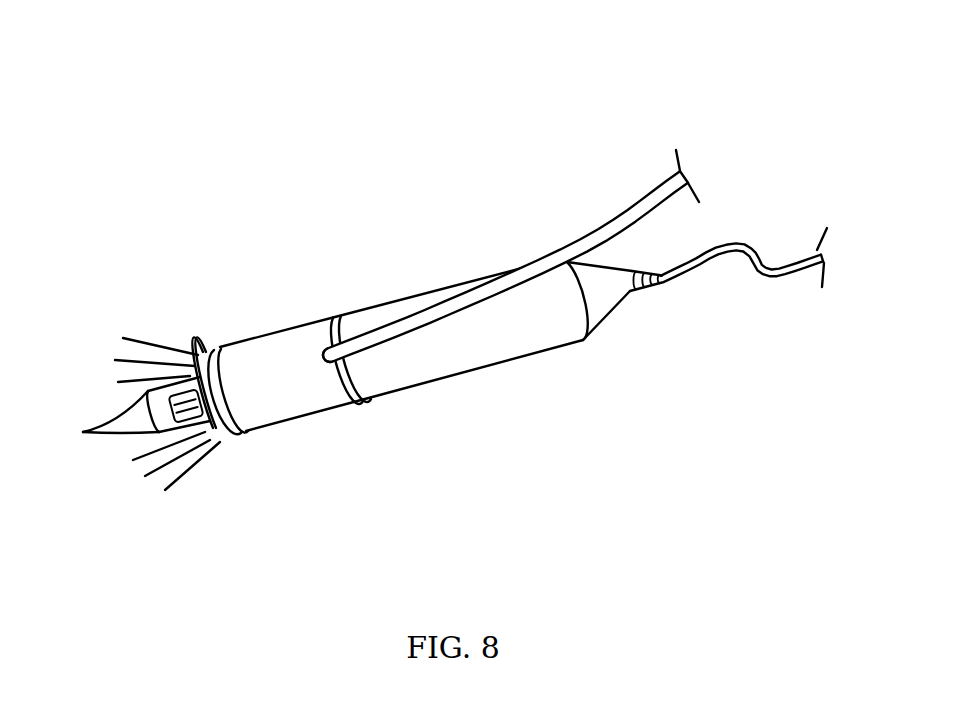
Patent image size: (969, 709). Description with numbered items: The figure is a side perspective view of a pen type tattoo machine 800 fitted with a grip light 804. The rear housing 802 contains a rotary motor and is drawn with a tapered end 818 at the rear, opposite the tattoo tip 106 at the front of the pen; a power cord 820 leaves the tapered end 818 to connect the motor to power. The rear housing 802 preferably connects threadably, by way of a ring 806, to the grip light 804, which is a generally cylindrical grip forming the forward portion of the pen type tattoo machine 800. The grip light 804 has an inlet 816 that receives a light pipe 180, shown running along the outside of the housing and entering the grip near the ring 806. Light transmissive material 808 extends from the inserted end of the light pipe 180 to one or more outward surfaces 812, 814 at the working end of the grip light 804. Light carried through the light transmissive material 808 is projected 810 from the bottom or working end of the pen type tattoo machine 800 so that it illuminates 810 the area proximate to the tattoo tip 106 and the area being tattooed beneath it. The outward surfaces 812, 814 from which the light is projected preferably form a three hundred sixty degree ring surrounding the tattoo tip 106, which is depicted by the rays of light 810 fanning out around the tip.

The pen type tattoo machine 800 is at (447, 140).
The tattoo tip 106 is at (118, 381).
The light pipe 180 is at (511, 244).
The rear housing 802 is at (460, 304).
The grip light 804 is at (291, 338).
The ring 806 is at (353, 316).
The light transmissive material 808 is at (243, 356).
The projected light 810 is at (167, 408).
The outward surface 812 is at (215, 341).
The outward surface 814 is at (209, 448).
The inlet 816 is at (317, 423).
The tapered end 818 is at (614, 335).
The power cord 820 is at (744, 289).